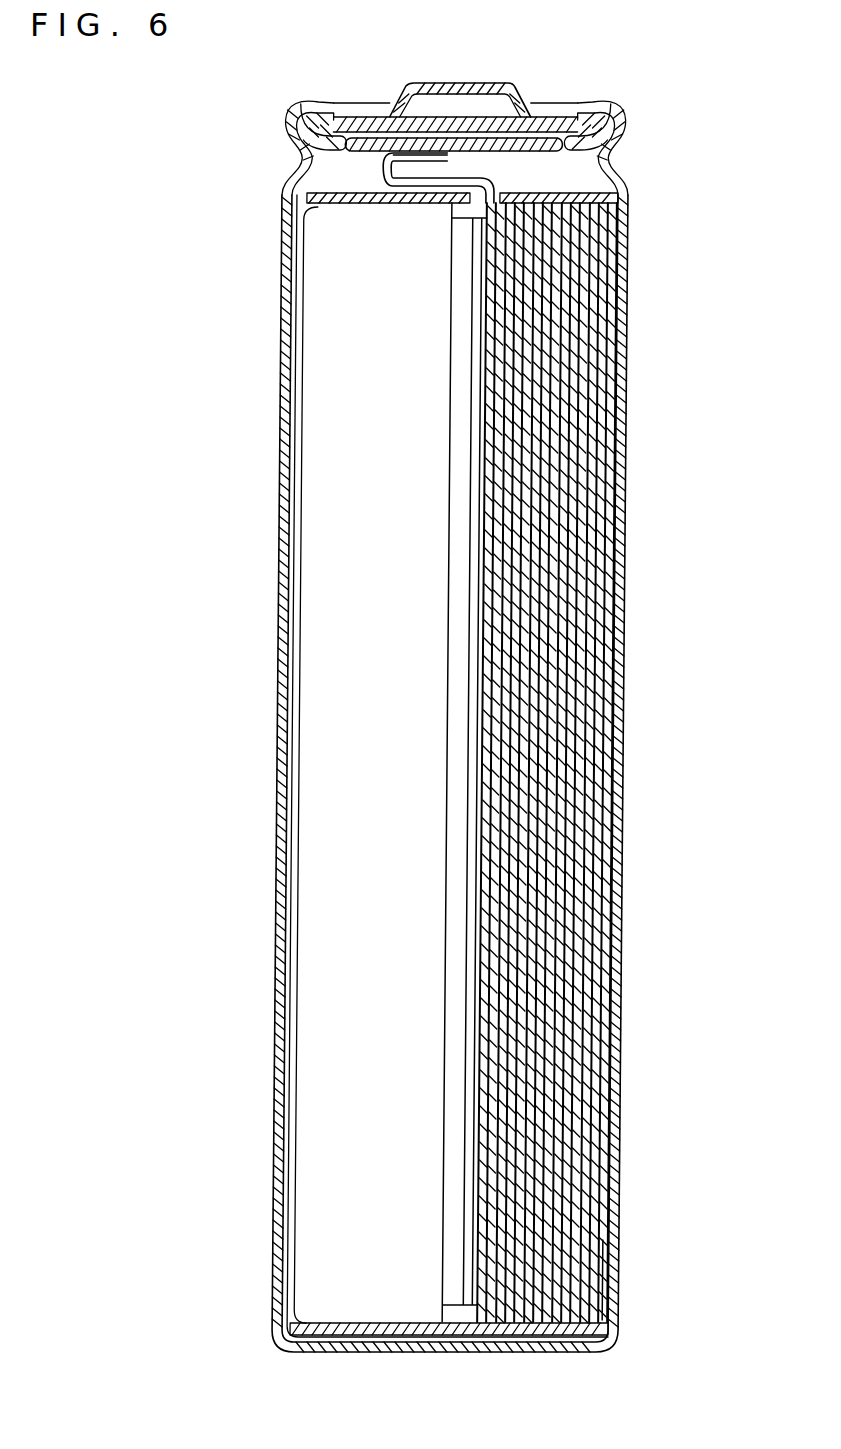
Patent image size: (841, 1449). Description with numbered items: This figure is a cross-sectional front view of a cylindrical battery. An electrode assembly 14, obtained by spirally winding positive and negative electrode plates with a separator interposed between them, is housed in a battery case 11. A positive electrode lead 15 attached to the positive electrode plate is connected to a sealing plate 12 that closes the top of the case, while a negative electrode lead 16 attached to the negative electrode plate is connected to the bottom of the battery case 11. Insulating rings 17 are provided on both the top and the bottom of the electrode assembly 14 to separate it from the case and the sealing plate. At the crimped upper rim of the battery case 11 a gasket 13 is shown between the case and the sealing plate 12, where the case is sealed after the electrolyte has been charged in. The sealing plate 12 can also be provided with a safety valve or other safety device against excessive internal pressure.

The battery case 11 is at (622, 1005).
The sealing plate 12 is at (482, 83).
The sealing gasket 13 is at (622, 103).
The electrode assembly 14 is at (625, 683).
The positive electrode lead 15 is at (383, 166).
The negative electrode lead 16 is at (603, 1253).
The insulating ring 17 is at (613, 180).